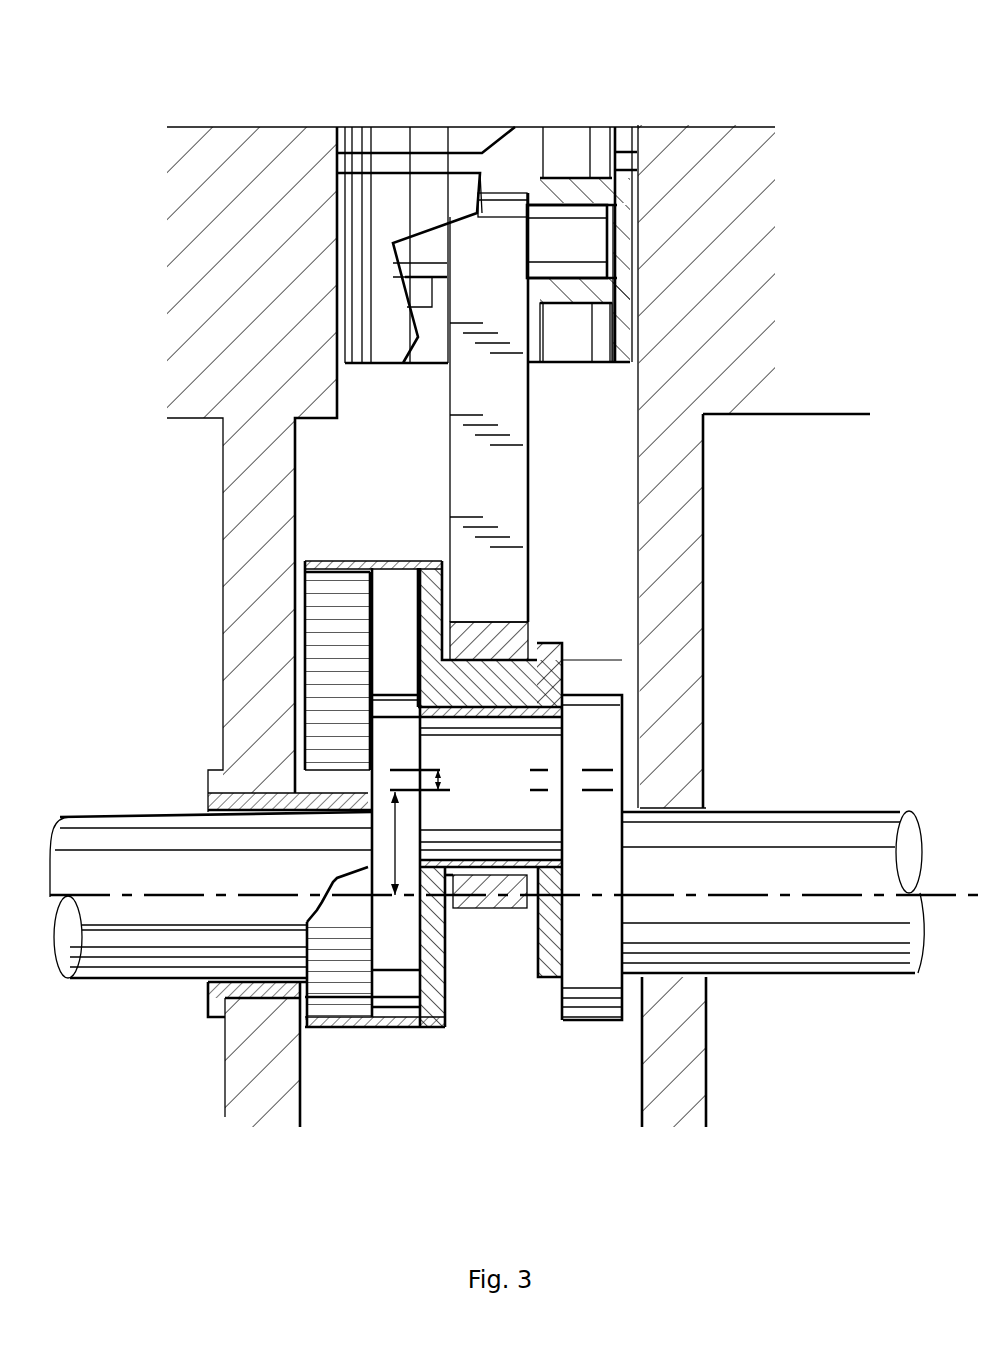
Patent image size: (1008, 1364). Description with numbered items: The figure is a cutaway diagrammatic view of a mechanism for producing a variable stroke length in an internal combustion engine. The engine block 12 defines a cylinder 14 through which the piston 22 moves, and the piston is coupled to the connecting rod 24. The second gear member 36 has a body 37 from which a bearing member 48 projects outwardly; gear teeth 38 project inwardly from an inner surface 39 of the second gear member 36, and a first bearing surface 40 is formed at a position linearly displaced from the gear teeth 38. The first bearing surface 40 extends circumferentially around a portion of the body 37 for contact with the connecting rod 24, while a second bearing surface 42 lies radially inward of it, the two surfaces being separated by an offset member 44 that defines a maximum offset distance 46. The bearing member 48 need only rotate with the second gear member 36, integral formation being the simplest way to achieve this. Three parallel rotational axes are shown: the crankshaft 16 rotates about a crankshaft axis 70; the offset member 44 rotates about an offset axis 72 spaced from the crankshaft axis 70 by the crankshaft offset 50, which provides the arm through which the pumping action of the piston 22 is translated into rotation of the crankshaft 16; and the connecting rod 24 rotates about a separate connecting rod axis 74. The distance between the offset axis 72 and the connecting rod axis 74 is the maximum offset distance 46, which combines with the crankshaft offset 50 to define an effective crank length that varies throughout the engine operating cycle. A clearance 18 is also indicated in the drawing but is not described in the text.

The engine block 12 is at (258, 672).
The cylinder 14 is at (357, 400).
The crankshaft 16 is at (163, 840).
The clearance 18 is at (510, 773).
The piston 22 is at (402, 137).
The connecting rod 24 is at (535, 522).
The second gear member 36 is at (347, 562).
The body 37 is at (433, 560).
The gear teeth 38 is at (338, 973).
The inner surface 39 is at (353, 1010).
The first bearing surface 40 is at (537, 643).
The second bearing surface 42 is at (443, 688).
The offset member 44 is at (565, 667).
The maximum offset distance 46 is at (440, 780).
The bearing member 48 is at (530, 932).
The crankshaft offset 50 is at (430, 905).
The crankshaft axis 70 is at (178, 898).
The offset axis 72 is at (532, 800).
The connecting rod axis 74 is at (532, 757).